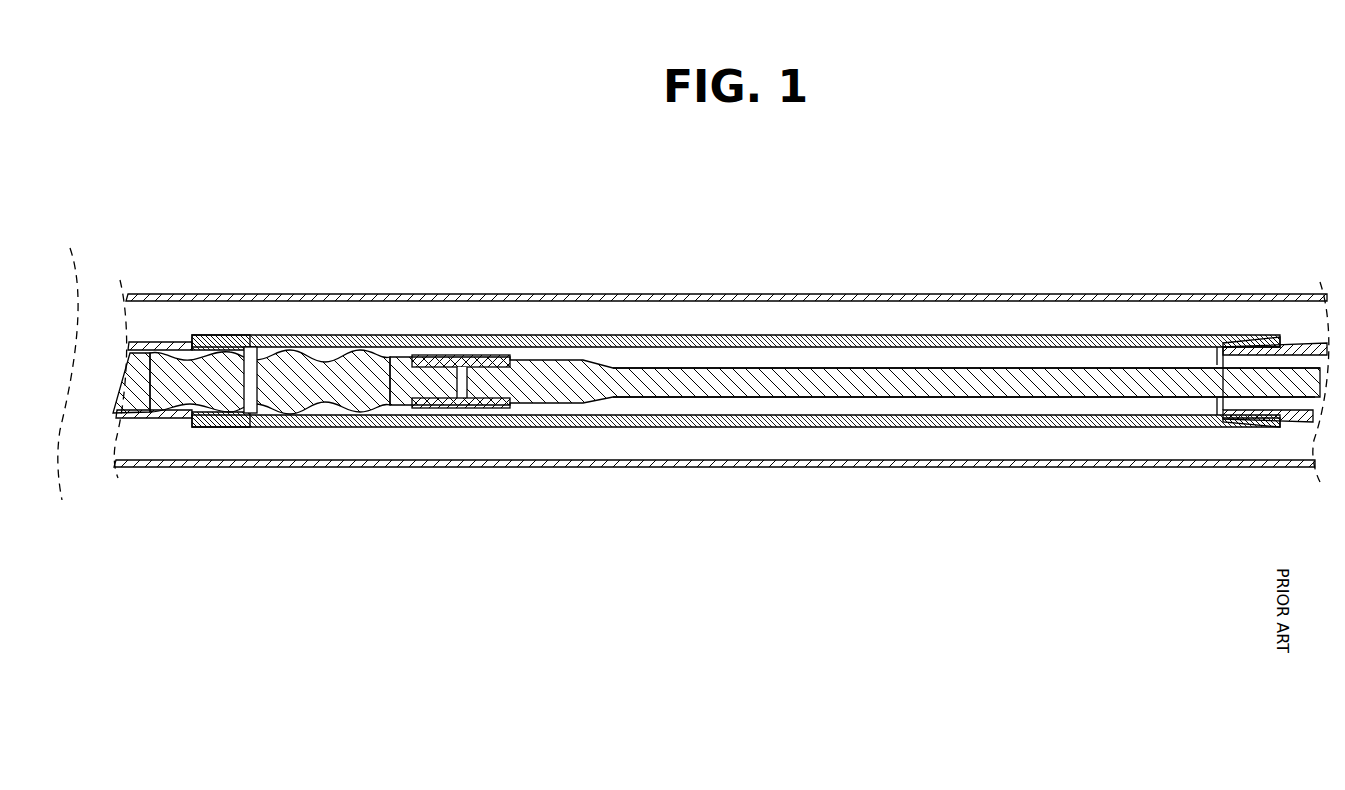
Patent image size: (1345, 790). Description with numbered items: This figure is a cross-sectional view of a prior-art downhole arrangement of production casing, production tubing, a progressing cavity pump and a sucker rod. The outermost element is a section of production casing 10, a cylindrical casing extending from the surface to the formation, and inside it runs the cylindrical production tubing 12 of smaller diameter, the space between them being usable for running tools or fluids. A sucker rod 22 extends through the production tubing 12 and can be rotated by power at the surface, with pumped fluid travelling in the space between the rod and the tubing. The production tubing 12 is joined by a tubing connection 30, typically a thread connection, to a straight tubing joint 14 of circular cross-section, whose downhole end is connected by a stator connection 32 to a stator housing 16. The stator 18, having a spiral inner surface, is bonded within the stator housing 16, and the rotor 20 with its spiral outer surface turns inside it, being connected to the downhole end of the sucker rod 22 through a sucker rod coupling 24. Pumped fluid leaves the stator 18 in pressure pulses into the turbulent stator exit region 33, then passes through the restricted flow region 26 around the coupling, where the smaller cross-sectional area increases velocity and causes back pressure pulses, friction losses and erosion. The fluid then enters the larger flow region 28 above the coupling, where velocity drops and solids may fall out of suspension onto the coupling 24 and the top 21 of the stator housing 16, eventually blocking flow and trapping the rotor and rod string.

The production casing 10 is at (822, 298).
The production tubing 12 is at (1272, 319).
The straight tubing joint 14 is at (698, 391).
The stator housing 16 is at (167, 347).
The stator 18 is at (153, 348).
The rotor 20 is at (716, 391).
The top of the stator housing 21 is at (262, 355).
The sucker rod 22 is at (1003, 378).
The sucker rod coupling 24 is at (458, 355).
The restricted flow region 26 is at (485, 412).
The larger flow region 28 is at (663, 408).
The tubing connection 30 is at (1240, 345).
The stator connection 32 is at (218, 343).
The stator exit region 33 is at (313, 412).